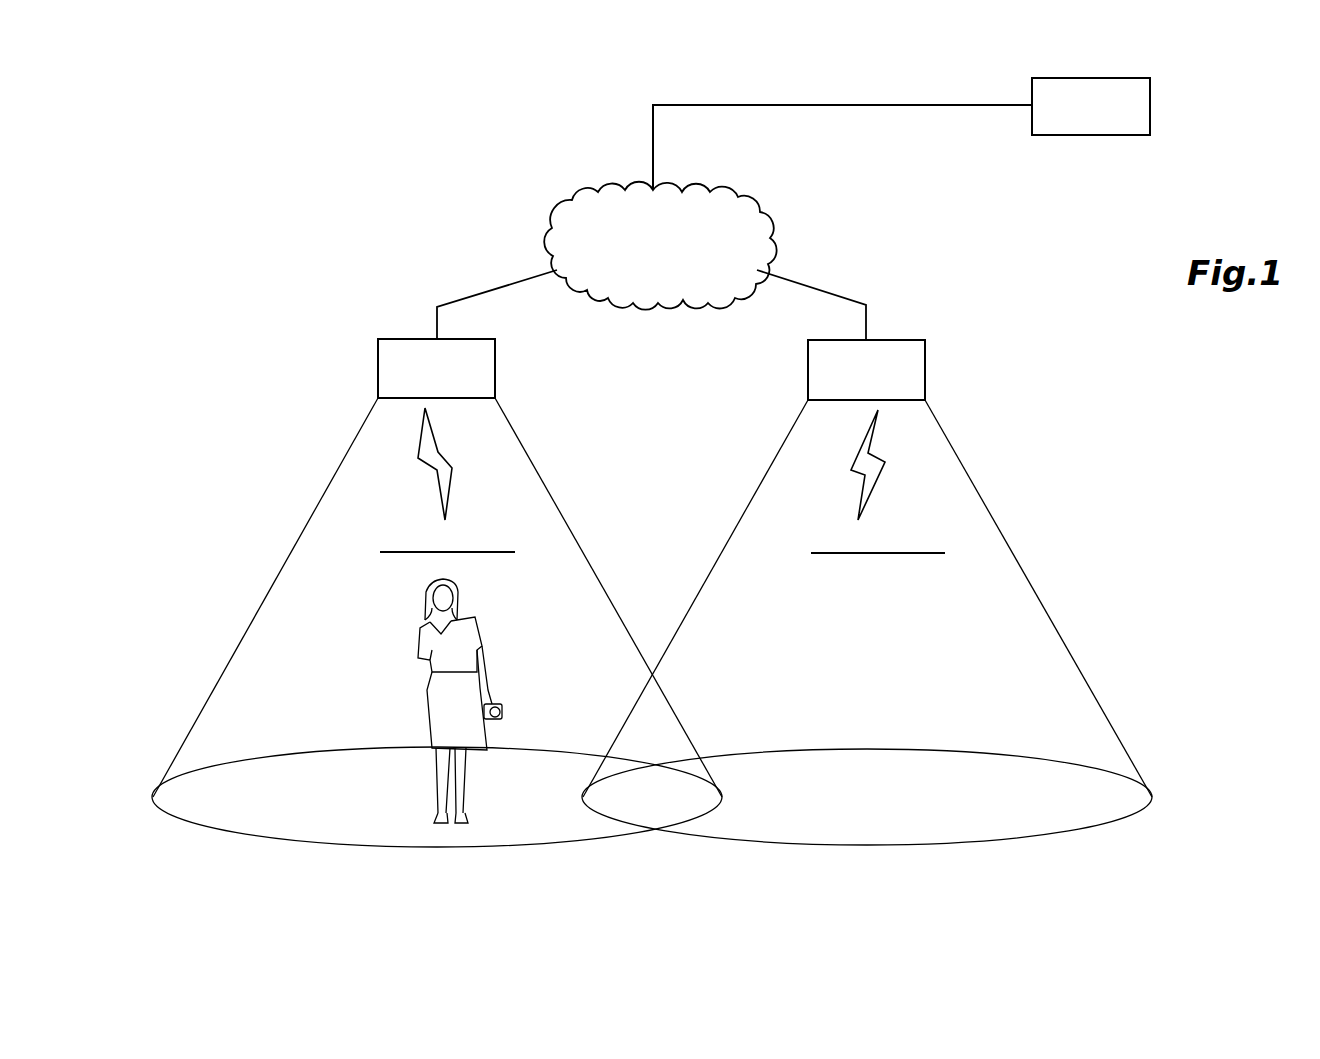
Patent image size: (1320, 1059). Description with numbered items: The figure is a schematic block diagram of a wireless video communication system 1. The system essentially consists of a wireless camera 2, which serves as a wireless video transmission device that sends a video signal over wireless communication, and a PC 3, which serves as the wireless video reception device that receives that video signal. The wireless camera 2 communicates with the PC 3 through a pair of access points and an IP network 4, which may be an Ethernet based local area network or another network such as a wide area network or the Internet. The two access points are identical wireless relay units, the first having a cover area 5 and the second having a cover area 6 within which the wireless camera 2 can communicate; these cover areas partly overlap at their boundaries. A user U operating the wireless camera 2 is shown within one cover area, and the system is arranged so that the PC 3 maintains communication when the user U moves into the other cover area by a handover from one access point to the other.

The wireless video communication system 1 is at (408, 153).
The wireless camera 2 is at (504, 712).
The PC 3 is at (1105, 135).
The IP network 4 is at (742, 200).
The cover area 5 is at (522, 448).
The cover area 6 is at (965, 470).
The user U is at (418, 641).